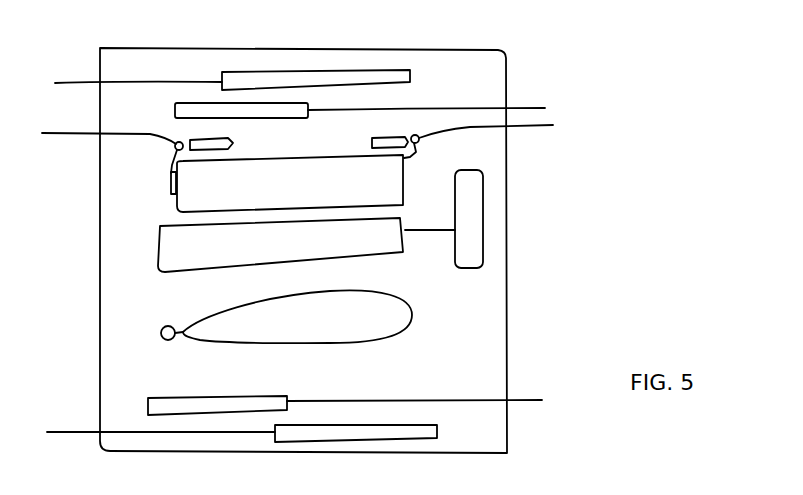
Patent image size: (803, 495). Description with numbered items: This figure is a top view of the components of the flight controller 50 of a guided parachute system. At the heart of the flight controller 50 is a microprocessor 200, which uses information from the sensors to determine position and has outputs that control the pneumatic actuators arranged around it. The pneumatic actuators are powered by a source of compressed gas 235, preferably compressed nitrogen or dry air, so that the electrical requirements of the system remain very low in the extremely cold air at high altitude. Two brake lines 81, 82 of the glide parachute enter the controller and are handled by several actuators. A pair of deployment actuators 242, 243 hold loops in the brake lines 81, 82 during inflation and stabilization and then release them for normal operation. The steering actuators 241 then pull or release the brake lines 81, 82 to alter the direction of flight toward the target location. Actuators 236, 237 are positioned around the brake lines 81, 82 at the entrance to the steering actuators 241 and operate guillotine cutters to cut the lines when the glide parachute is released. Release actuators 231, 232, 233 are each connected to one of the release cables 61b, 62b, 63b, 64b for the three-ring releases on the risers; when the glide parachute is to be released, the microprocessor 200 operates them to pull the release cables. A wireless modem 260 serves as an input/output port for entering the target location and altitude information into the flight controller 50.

The flight controller 50 is at (512, 78).
The release cable 61b is at (69, 77).
The release cable 62b is at (63, 430).
The release cable 63b is at (528, 403).
The release cable 64b is at (522, 101).
The brake line 81 is at (72, 136).
The brake line 82 is at (532, 127).
The release actuator 231 is at (376, 69).
The release actuator 232 is at (258, 393).
The release actuator 233 is at (296, 120).
The source of compressed gas 235 is at (395, 335).
The actuator 236 is at (407, 172).
The actuator 237 is at (170, 186).
The steering actuator 241 is at (290, 183).
The deployment actuator 242 is at (228, 142).
The deployment actuator 243 is at (395, 133).
The microprocessor 200 is at (393, 255).
The wireless modem 260 is at (483, 198).